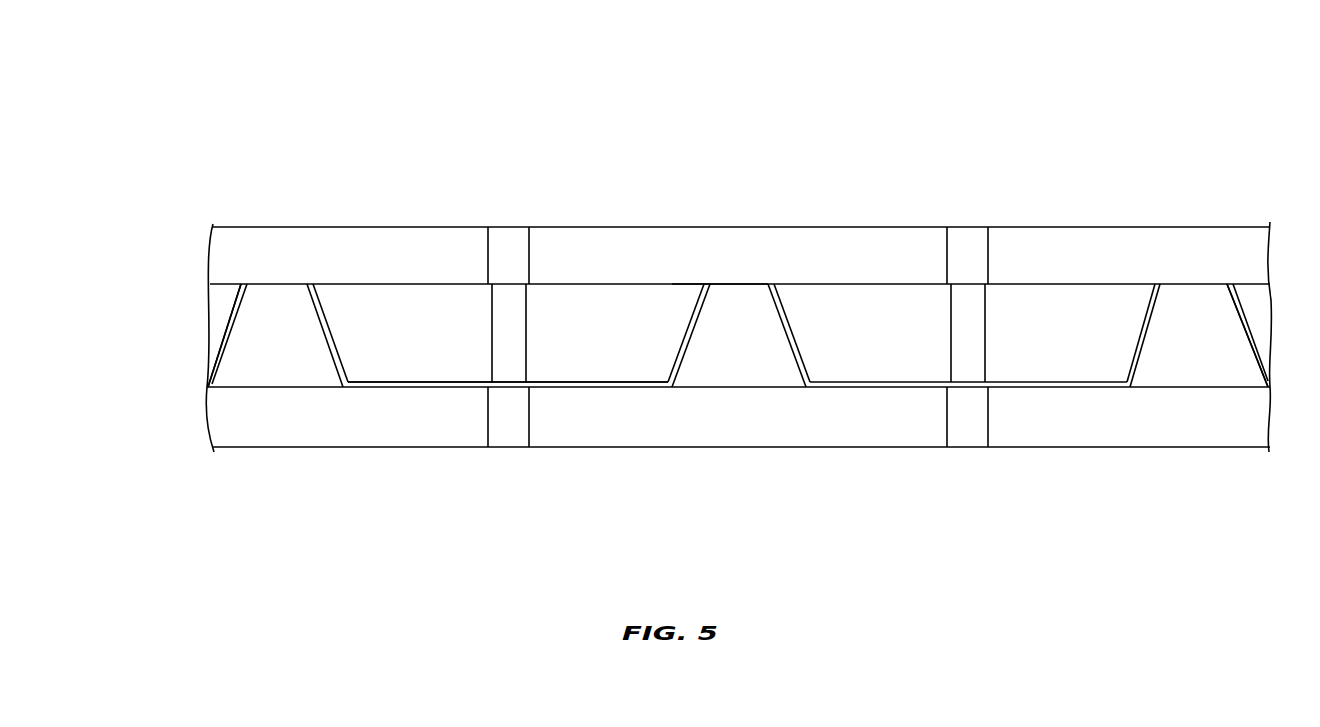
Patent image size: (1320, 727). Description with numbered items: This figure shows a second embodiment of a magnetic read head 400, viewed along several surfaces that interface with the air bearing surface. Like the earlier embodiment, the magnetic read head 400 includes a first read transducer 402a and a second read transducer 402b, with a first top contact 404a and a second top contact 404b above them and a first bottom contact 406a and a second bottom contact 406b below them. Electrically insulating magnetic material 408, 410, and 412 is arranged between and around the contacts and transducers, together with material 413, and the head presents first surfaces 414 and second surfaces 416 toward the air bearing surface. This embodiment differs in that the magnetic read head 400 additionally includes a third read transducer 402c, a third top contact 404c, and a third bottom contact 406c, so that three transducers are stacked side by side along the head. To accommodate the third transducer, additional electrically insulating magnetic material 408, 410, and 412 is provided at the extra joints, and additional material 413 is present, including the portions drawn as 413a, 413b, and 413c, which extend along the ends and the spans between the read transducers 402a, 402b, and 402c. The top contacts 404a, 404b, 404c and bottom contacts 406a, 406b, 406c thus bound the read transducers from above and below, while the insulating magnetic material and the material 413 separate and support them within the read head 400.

The magnetic read head 400 is at (836, 90).
The first read transducer 402a is at (735, 258).
The second read transducer 402b is at (1207, 275).
The third read transducer 402c is at (280, 262).
The first top contact 404a is at (808, 250).
The second top contact 404b is at (1160, 257).
The third top contact 404c is at (350, 250).
The first bottom contact 406a is at (820, 435).
The second bottom contact 406b is at (1022, 430).
The third bottom contact 406c is at (363, 433).
The electrically insulating magnetic material 408 is at (515, 247).
The electrically insulating magnetic material 410 is at (499, 428).
The electrically insulating magnetic material 412 is at (634, 376).
The material 413 is at (470, 318).
The core web segment 413a is at (583, 328).
The core web end leg 413b is at (1250, 295).
The additional material 413c is at (220, 305).
The first surfaces 414 is at (726, 283).
The second surfaces 416 is at (1152, 390).